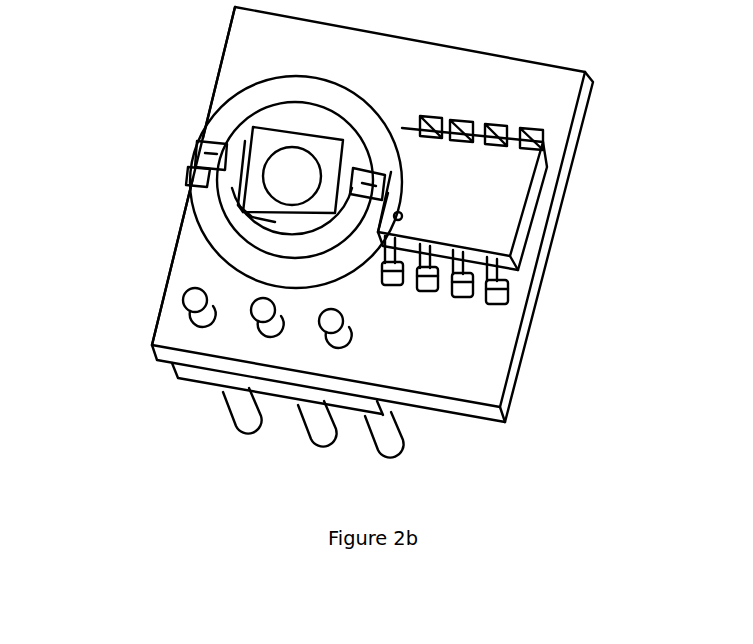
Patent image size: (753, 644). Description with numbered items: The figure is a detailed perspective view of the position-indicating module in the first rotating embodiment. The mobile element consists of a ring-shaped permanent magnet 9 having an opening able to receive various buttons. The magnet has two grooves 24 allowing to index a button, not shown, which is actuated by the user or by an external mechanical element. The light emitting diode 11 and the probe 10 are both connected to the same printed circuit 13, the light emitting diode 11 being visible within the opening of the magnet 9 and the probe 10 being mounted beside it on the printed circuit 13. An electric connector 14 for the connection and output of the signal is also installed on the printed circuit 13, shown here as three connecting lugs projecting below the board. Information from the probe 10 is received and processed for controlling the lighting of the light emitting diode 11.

The ring-shaped permanent magnet 9 is at (255, 92).
The probe 10 is at (490, 170).
The light emitting diode 11 is at (247, 155).
The printed circuit 13 is at (533, 290).
The electric connector 14 is at (210, 410).
The grooves 24 is at (378, 182).